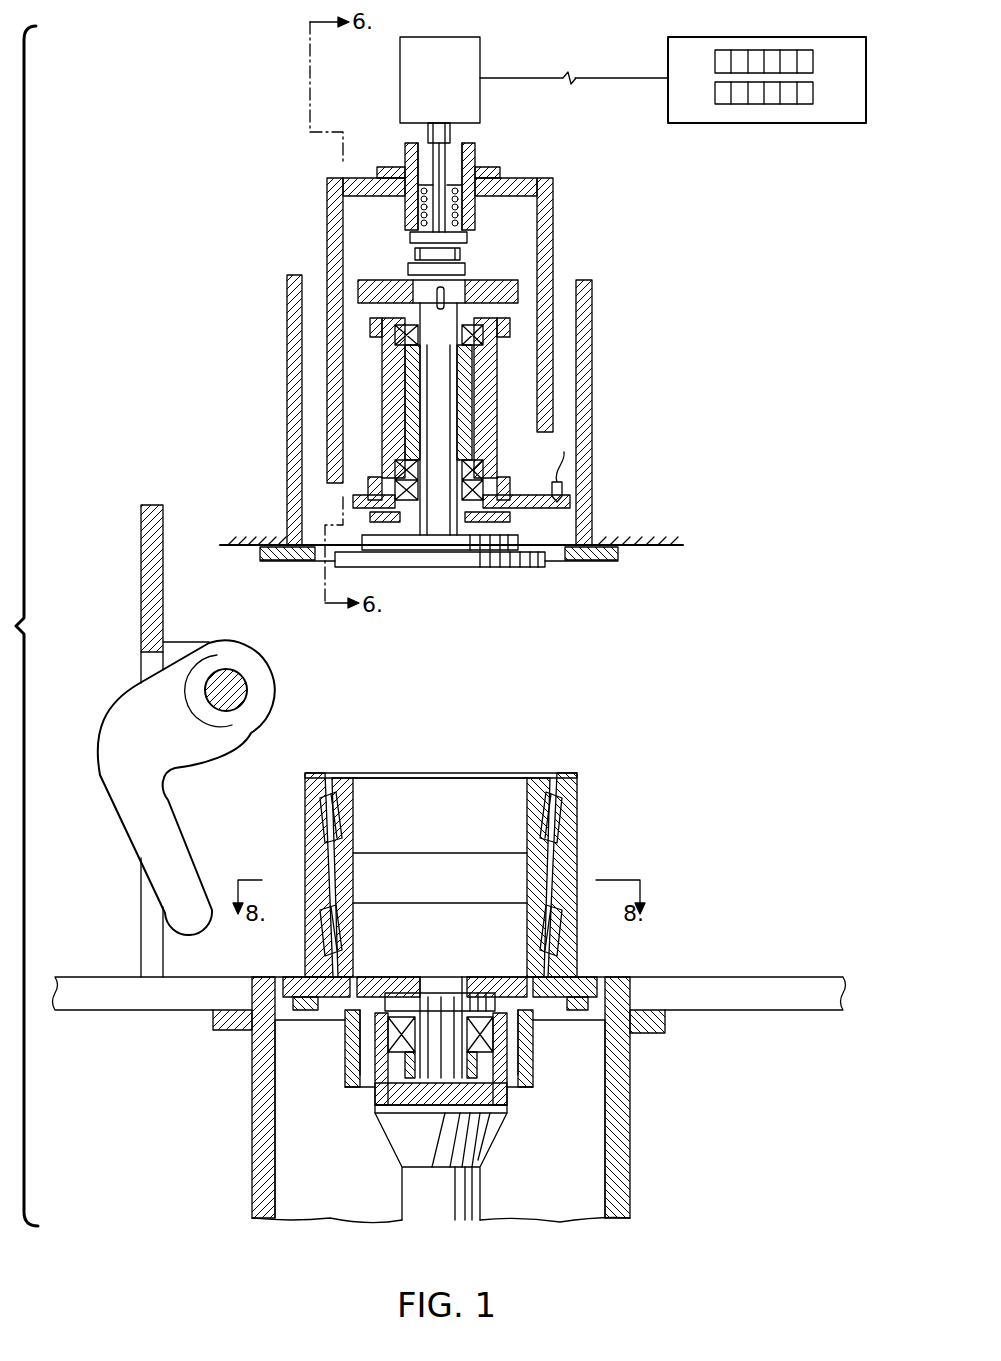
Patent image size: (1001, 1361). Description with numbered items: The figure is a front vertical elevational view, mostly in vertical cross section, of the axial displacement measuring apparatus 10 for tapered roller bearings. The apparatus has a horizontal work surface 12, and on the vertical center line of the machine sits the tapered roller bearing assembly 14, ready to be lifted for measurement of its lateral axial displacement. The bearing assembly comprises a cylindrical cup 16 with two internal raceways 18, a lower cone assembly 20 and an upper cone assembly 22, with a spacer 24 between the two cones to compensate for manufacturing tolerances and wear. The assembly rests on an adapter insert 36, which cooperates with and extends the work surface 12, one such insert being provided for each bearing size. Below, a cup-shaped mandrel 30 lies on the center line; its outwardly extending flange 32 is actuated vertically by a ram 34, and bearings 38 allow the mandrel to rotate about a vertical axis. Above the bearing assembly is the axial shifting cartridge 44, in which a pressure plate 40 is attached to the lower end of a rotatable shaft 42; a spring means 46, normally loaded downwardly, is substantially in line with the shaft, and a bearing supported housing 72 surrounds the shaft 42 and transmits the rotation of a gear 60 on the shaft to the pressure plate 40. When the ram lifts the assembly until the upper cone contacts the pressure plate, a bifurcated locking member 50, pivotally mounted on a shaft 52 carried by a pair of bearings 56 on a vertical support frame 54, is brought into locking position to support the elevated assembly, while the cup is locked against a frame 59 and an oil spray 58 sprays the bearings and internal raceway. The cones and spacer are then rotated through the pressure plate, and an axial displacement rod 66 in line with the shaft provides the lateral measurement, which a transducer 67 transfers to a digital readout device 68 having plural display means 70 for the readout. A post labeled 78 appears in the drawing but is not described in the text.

The axial displacement measuring apparatus 10 is at (632, 750).
The horizontal work surface 12 is at (748, 976).
The tapered roller bearing assembly 14 is at (628, 857).
The cylindrical cup 16 is at (576, 845).
The internal raceways 18 is at (558, 946).
The lower cone assembly 20 is at (370, 945).
The upper cone assembly 22 is at (370, 826).
The spacer 24 is at (355, 878).
The mandrel 30 is at (410, 975).
The flange 32 is at (542, 1080).
The ram 34 is at (462, 1192).
The adapter insert 36 is at (584, 976).
The bearings 38 is at (492, 1037).
The pressure plate 40 is at (473, 567).
The rotatable shaft 42 is at (430, 383).
The axial shifting cartridge 44 is at (518, 246).
The spring means 46 is at (472, 208).
The bifurcated locking member 50 is at (149, 850).
The shaft 52 is at (225, 680).
The vertical support frame 54 is at (148, 606).
The bearings 56 is at (185, 640).
The oil spray 58 is at (566, 482).
The frame 59 is at (586, 303).
The gear 60 is at (383, 278).
The axial displacement rod 66 is at (452, 152).
The transducer 67 is at (424, 86).
The digital readout device 68 is at (792, 124).
The plural display means 70 is at (815, 60).
The bearing supported housing 72 is at (499, 413).
The guide post 78 is at (328, 220).